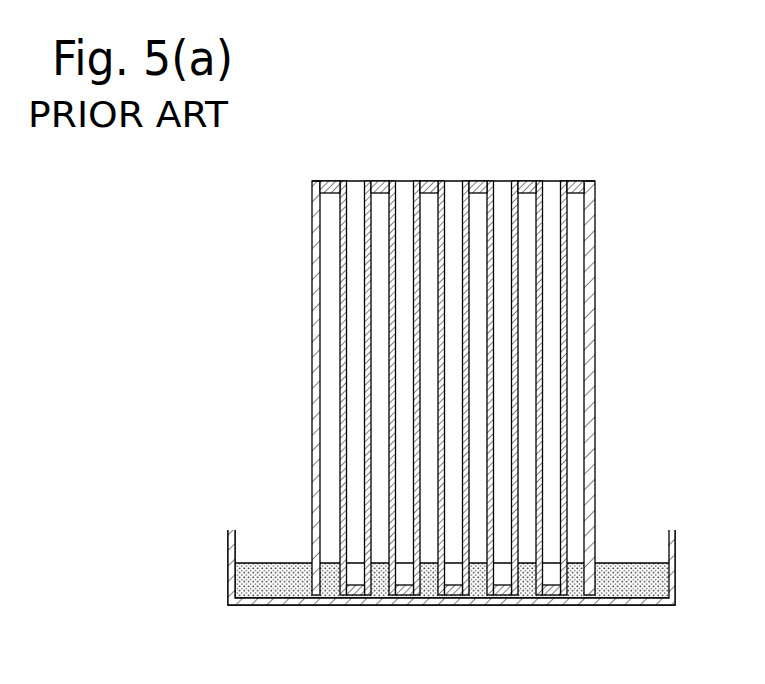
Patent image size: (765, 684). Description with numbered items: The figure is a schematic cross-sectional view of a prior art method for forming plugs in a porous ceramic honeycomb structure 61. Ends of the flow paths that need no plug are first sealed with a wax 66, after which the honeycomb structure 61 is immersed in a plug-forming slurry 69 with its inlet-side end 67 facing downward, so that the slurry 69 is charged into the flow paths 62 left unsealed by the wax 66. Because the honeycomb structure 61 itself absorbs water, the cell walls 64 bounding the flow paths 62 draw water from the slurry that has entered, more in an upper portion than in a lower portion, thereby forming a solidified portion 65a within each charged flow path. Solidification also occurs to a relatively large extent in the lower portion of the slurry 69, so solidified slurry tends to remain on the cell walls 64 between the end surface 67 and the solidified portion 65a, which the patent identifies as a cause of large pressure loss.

The porous ceramic honeycomb structure 61 is at (421, 390).
The flow paths 62 is at (334, 531).
The cell walls 64 is at (509, 223).
The solidified portion 65a is at (325, 565).
The wax 66 is at (381, 181).
The inlet-side end 67 is at (418, 595).
The plug-forming slurry 69 is at (278, 597).